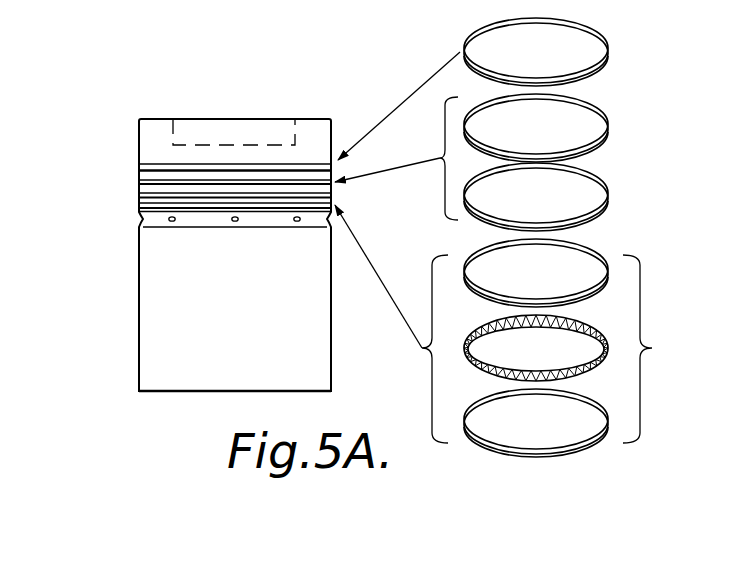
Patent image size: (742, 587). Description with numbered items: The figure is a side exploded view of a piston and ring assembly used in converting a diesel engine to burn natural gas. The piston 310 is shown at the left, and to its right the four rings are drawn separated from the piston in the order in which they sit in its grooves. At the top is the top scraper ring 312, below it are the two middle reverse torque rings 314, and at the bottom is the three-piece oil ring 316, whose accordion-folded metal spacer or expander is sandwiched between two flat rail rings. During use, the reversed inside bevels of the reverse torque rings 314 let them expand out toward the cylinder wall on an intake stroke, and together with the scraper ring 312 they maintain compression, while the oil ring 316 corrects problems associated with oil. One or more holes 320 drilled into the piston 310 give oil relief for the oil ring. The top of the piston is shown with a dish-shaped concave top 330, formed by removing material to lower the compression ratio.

The piston 310 is at (316, 128).
The concave top 330 is at (223, 128).
The holes 320 is at (172, 222).
The top scraper ring 312 is at (608, 44).
The middle reverse torque rings 314 is at (608, 120).
The three-piece oil ring 316 is at (565, 348).